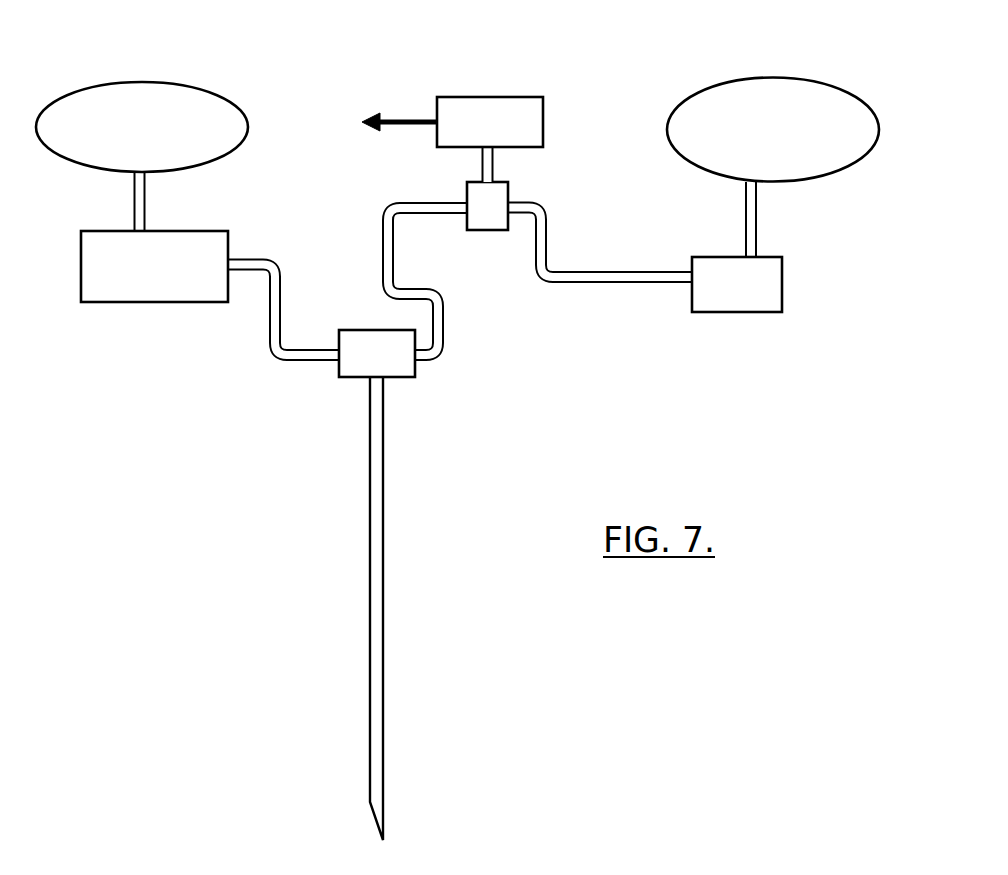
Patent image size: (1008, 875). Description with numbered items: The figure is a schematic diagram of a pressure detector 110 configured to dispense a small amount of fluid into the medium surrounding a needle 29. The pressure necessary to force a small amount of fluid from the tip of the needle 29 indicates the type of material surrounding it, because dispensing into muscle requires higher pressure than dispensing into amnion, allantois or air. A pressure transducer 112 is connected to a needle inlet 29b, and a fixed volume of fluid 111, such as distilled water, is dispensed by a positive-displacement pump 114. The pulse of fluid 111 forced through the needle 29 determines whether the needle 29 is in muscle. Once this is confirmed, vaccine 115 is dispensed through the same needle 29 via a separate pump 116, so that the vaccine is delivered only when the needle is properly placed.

The pressure detector 110 is at (641, 72).
The fluid 111 is at (830, 85).
The pressure transducer 112 is at (543, 128).
The positive-displacement pump 114 is at (782, 287).
The vaccine 115 is at (204, 90).
The pump 116 is at (183, 229).
The needle 29 is at (383, 542).
The needle inlet 29b is at (383, 410).